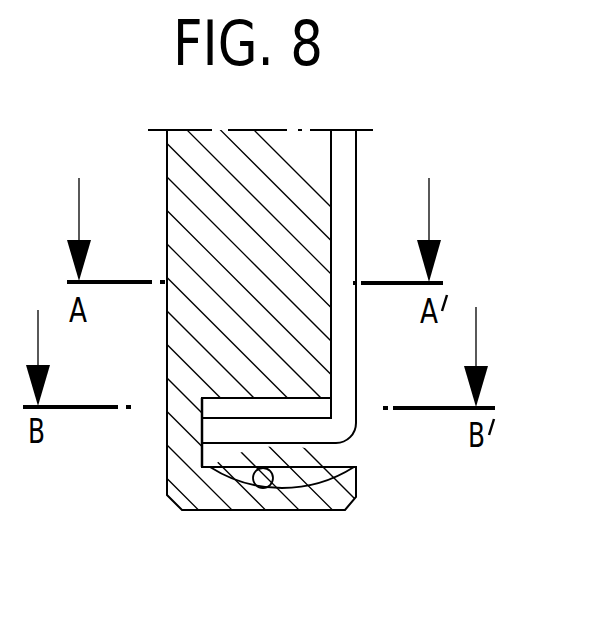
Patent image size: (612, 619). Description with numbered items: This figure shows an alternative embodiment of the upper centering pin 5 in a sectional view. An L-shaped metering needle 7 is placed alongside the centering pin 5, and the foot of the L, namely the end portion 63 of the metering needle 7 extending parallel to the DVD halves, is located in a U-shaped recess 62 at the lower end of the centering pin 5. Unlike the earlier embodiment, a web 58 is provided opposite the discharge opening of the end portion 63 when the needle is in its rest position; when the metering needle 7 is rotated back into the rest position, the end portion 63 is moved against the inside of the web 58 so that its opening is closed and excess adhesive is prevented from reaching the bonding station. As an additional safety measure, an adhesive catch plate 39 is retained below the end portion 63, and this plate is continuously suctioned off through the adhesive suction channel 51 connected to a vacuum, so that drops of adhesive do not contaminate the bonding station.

The upper centering pin 5 is at (168, 164).
The metering needle 7 is at (340, 168).
The web 58 is at (168, 438).
The U-shaped recess 62 is at (332, 458).
The end portion of the metering needle 63 is at (221, 430).
The channel 51 is at (263, 489).
The adhesive catch plate 39 is at (300, 477).